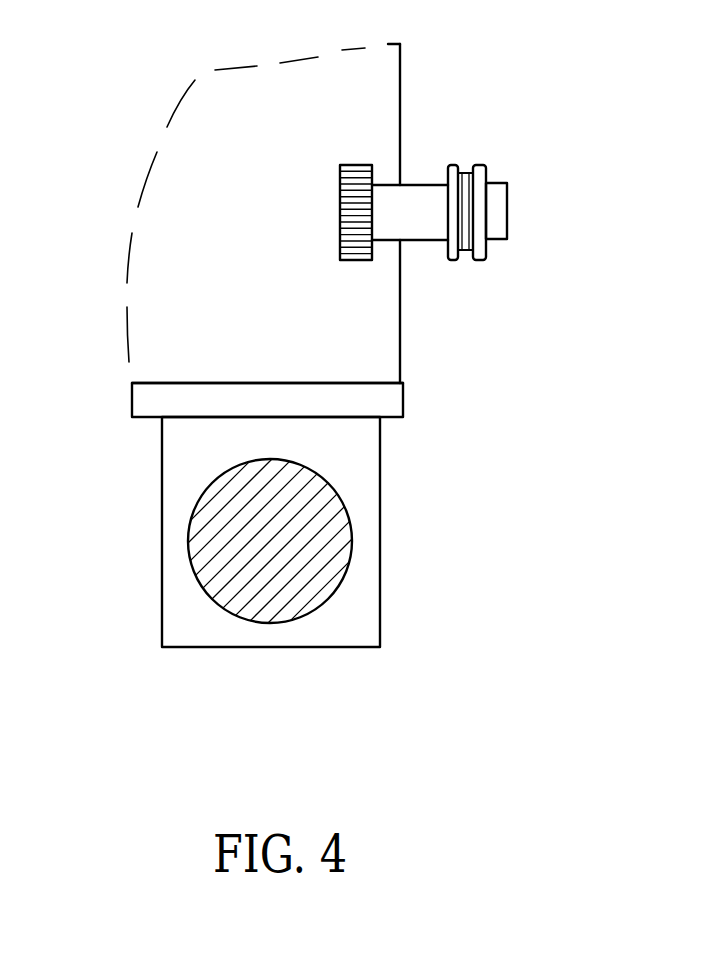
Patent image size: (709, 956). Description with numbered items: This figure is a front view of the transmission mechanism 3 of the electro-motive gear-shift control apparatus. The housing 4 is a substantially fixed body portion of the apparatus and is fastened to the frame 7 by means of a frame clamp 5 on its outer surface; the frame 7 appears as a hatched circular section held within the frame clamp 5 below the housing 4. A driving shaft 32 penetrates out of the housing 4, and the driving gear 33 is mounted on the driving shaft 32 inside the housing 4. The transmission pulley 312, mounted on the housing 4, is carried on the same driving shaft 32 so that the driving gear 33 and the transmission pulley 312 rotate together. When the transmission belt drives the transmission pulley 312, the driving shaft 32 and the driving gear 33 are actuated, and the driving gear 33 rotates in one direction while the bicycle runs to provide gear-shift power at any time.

The transmission mechanism 3 is at (516, 278).
The housing 4 is at (180, 210).
The frame clamp 5 is at (182, 450).
The frame 7 is at (327, 545).
The driving shaft 32 is at (500, 211).
The driving gear 33 is at (348, 193).
The transmission pulley 312 is at (466, 243).